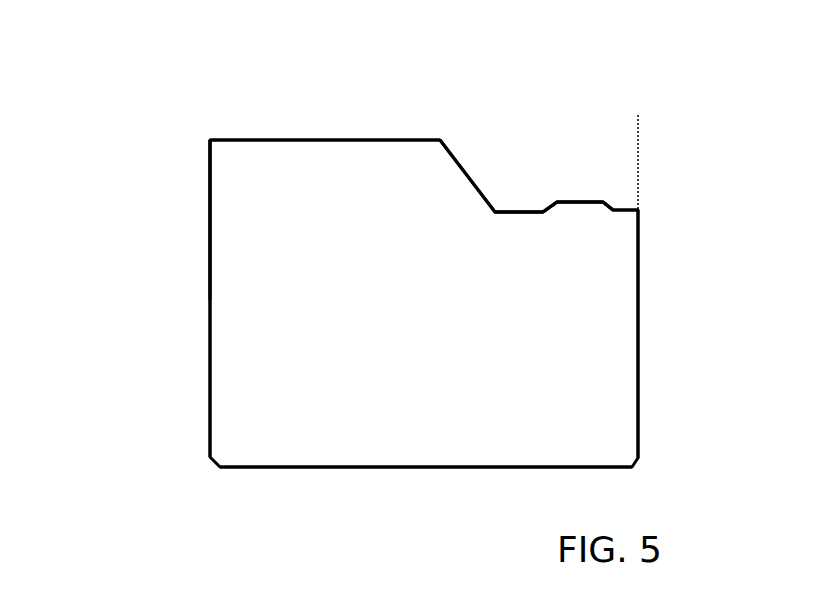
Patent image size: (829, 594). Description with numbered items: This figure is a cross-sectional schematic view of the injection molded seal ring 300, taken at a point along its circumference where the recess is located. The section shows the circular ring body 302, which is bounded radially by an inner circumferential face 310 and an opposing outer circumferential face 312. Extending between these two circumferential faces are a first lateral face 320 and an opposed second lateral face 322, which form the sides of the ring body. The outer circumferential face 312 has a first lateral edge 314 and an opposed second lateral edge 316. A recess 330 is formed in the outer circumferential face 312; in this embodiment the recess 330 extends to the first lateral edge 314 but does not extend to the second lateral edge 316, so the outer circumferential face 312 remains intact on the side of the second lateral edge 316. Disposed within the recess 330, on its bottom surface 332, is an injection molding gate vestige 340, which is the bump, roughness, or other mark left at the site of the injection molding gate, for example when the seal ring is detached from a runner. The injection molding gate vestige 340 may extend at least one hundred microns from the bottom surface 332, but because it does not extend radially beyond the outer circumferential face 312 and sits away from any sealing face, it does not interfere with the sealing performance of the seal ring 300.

The injection molded seal ring 300 is at (101, 56).
The circular ring body 302 is at (452, 320).
The inner circumferential face 310 is at (457, 467).
The outer circumferential face 312 is at (390, 140).
The first lateral edge 314 is at (638, 145).
The second lateral edge 316 is at (210, 140).
The first lateral face 320 is at (639, 323).
The second lateral face 322 is at (210, 321).
The recess 330 is at (538, 117).
The bottom surface 332 is at (513, 210).
The injection molding gate vestige 340 is at (590, 202).